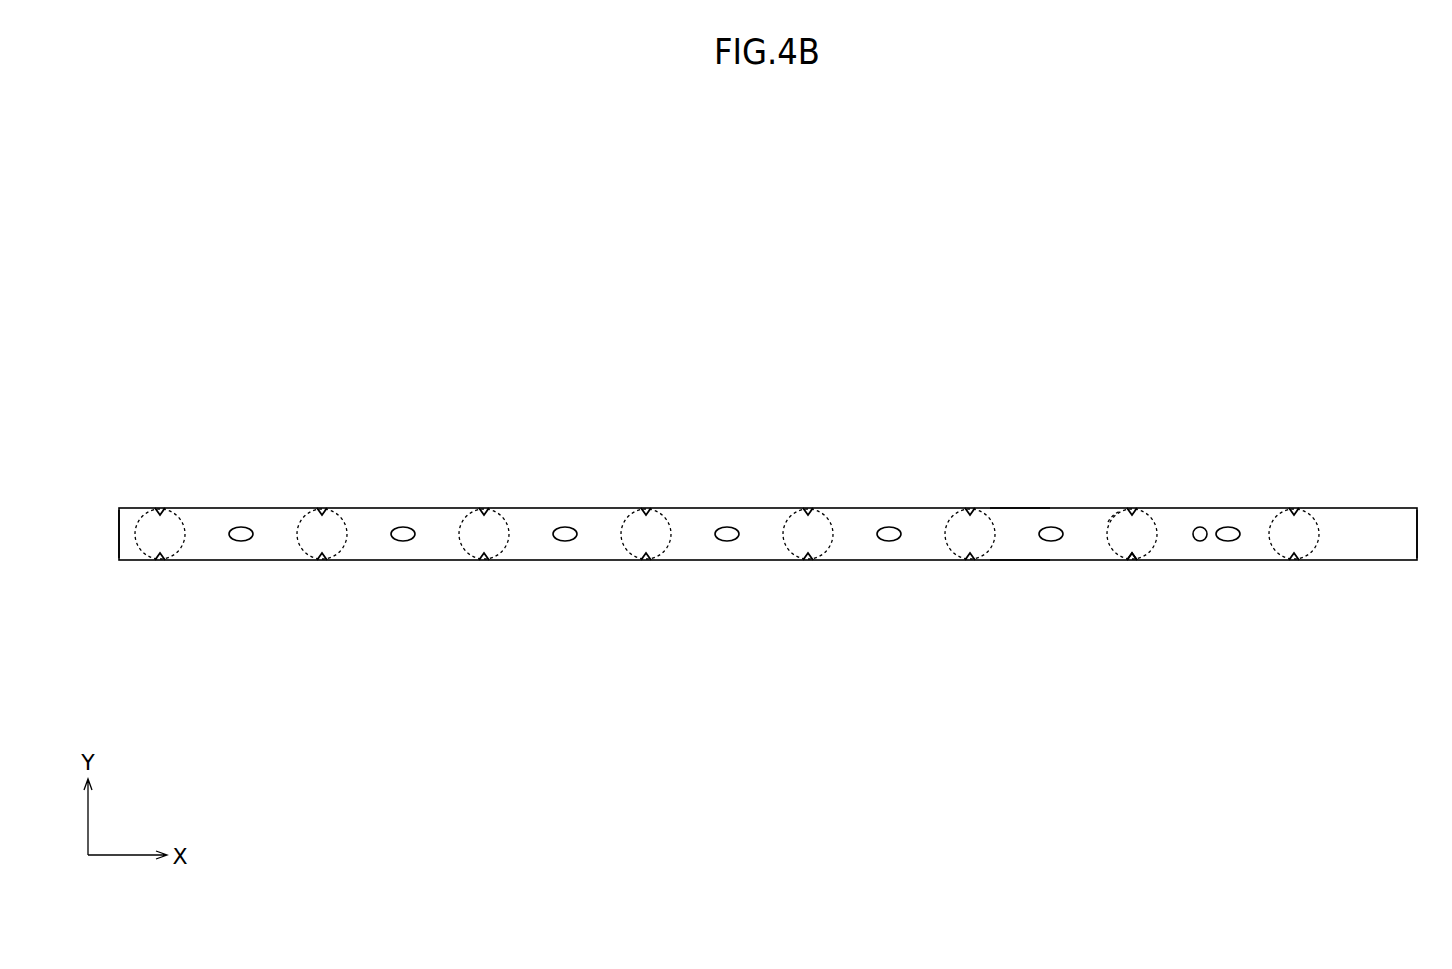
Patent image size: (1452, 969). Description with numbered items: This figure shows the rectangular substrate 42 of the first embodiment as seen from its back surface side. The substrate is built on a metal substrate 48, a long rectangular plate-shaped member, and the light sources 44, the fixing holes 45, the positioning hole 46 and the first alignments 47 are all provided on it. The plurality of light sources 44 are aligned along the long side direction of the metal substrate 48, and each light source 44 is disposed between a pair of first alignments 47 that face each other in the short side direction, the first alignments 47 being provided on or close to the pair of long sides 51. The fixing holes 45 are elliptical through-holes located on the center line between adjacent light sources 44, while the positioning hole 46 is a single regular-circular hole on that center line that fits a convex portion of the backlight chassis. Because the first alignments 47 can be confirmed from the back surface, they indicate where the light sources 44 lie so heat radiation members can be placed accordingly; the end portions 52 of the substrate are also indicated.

The rectangular substrate 42 is at (711, 452).
The light source 44 is at (1110, 530).
The fixing hole 45 is at (895, 528).
The positioning hole 46 is at (1198, 527).
The first alignment 47 is at (1133, 558).
The metal substrate 48 is at (692, 542).
The long side 51 is at (1017, 507).
The end portion 52 is at (118, 538).